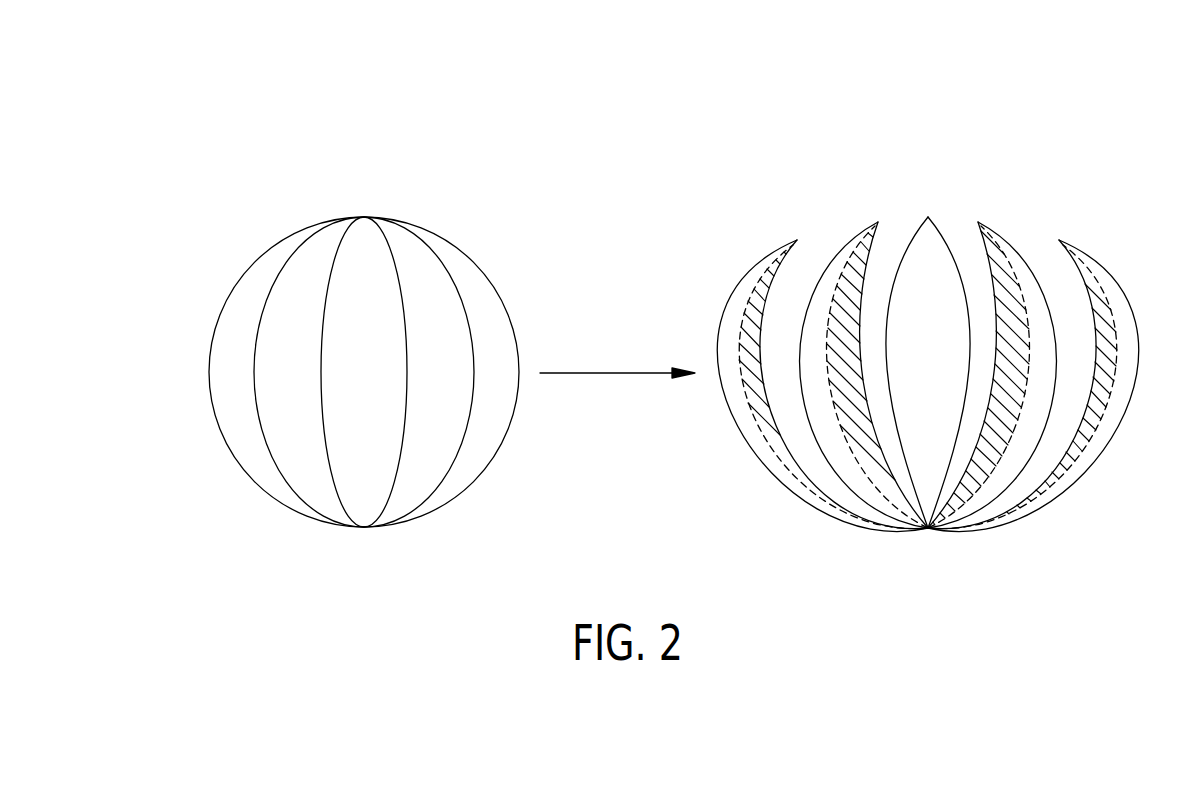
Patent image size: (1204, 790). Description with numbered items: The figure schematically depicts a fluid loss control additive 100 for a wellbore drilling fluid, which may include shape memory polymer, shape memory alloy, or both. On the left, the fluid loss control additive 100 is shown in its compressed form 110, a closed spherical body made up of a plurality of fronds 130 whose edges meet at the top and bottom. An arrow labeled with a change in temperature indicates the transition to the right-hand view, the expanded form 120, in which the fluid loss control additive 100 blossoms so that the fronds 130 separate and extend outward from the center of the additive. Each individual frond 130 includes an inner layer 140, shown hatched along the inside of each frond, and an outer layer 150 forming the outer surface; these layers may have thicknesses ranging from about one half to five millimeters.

The fluid loss control additive 100 is at (200, 155).
The compressed form 110 is at (290, 185).
The expanded form 120 is at (865, 186).
The fronds 130 is at (246, 331).
The inner layer 140 is at (762, 300).
The outer layer 150 is at (738, 433).